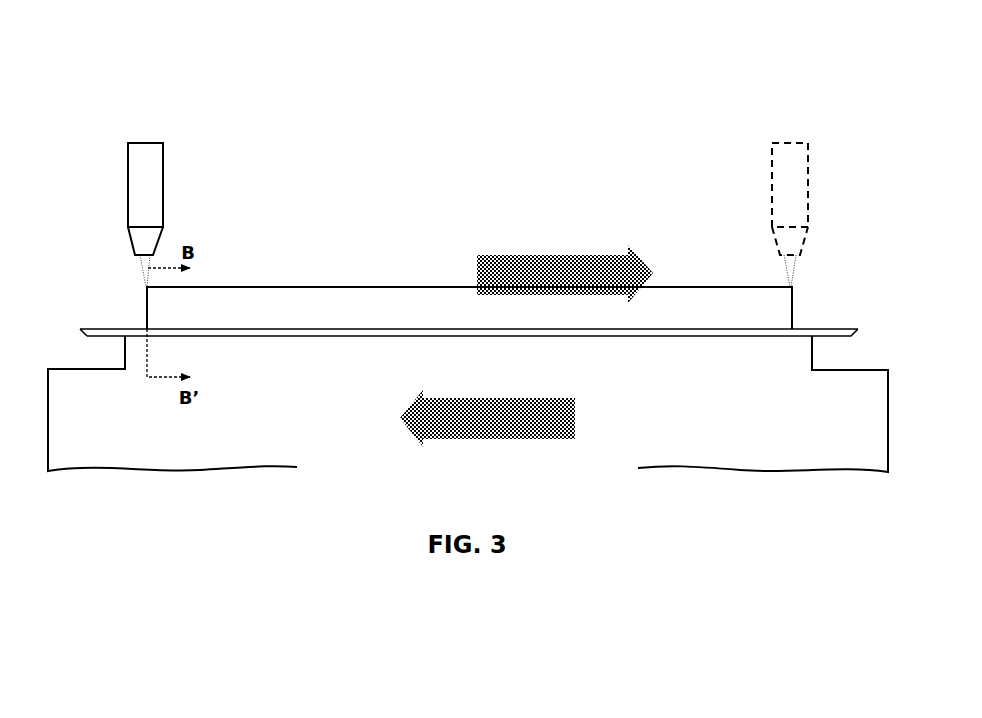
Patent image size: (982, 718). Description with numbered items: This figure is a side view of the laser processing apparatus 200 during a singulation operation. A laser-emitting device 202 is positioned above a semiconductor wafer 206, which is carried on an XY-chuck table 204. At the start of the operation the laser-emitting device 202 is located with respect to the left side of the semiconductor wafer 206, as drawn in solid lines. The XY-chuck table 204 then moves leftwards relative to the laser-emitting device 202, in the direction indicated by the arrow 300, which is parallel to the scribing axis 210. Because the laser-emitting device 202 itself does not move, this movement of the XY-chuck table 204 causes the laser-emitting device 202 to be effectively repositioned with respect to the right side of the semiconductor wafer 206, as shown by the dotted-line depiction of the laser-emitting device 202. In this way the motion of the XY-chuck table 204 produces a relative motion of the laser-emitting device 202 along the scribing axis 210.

The laser processing apparatus 200 is at (726, 67).
The laser-emitting device 202 is at (174, 191).
The XY-chuck table 204 is at (249, 408).
The semiconductor wafer 206 is at (269, 282).
The scribing axis 210 is at (564, 252).
The arrow 300 is at (484, 400).